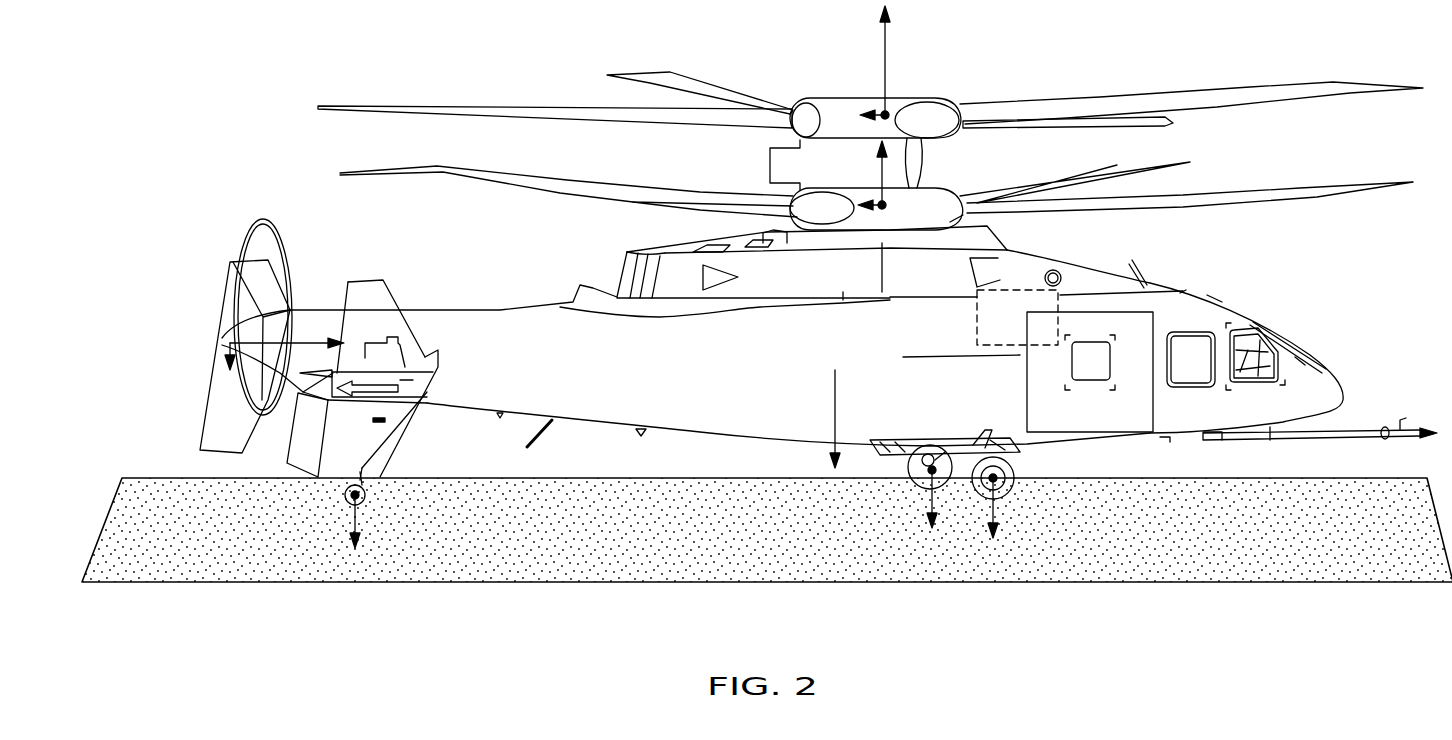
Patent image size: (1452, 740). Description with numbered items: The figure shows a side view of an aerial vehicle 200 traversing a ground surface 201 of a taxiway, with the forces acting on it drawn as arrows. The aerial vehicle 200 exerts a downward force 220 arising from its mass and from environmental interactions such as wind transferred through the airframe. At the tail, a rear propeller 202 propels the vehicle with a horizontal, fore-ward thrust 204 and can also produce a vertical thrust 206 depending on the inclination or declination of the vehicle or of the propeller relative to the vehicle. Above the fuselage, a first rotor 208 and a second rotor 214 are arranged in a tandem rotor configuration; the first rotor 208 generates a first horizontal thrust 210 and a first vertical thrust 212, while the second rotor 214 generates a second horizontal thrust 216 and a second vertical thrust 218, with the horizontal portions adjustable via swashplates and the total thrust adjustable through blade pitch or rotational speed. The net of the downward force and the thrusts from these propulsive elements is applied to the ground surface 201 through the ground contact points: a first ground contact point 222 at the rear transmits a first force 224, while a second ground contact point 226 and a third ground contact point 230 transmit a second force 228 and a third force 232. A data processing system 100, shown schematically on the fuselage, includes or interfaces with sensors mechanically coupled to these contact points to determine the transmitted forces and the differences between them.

The data processing system 100 is at (1038, 329).
The aerial vehicle 200 is at (833, 371).
The ground surface 201 is at (1224, 565).
The rear propeller 202 is at (222, 338).
The thrust 204 is at (305, 340).
The thrust 206 is at (222, 362).
The first rotor 208 is at (940, 216).
The first horizontal thrust 210 is at (868, 201).
The first vertical thrust 212 is at (915, 152).
The second rotor 214 is at (950, 126).
The second horizontal thrust 216 is at (868, 110).
The second vertical thrust 218 is at (885, 25).
The downward force 220 is at (825, 458).
The first ground contact point 222 is at (365, 497).
The first force 224 is at (360, 540).
The second ground contact point 226 is at (910, 470).
The second force 228 is at (925, 520).
The third ground contact point 230 is at (1015, 490).
The third force 232 is at (1000, 535).